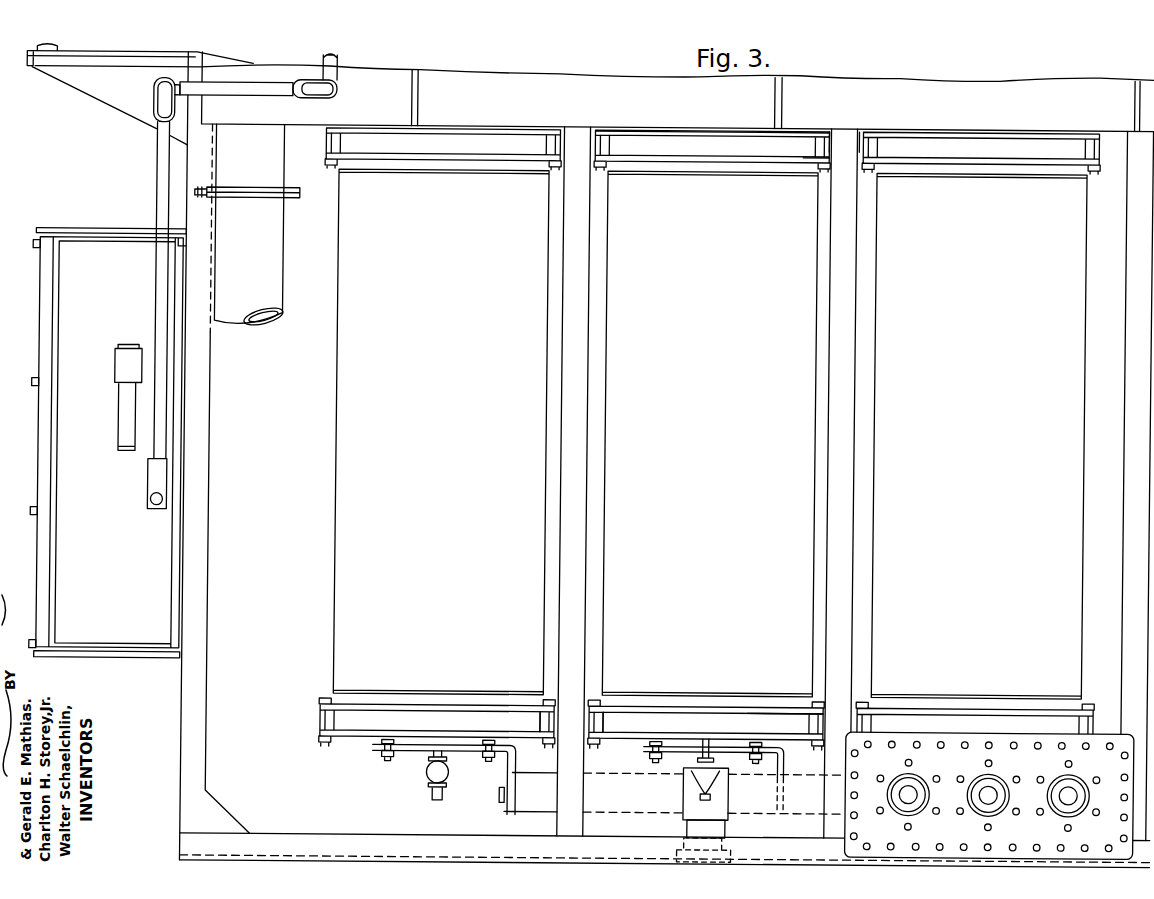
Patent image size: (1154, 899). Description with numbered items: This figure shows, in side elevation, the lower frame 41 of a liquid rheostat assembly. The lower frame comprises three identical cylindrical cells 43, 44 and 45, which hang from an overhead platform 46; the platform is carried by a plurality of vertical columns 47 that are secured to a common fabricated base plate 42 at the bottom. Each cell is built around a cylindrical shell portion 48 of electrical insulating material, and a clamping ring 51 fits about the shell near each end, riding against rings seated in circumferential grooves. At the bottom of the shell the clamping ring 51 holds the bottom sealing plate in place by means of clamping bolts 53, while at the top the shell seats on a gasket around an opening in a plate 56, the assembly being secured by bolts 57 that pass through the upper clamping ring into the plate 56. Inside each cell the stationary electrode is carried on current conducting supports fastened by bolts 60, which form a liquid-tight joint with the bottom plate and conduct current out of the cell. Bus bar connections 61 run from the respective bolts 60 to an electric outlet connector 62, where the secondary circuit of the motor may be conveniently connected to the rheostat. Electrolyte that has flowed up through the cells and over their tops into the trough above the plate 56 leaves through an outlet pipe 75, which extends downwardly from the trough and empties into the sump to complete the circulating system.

The lower frame 41 is at (134, 185).
The fabricated base plate 42 is at (337, 842).
The cylindrical cell 43 is at (459, 187).
The cylindrical cell 44 is at (709, 182).
The cylindrical cell 45 is at (957, 187).
The overhead platform 46 is at (1096, 86).
The vertical columns 47 is at (188, 733).
The cylindrical shell portion 48 is at (871, 307).
The clamping ring 51 is at (802, 163).
The clamping bolts 53 is at (596, 726).
The plate 56 is at (790, 131).
The bolts 57 is at (857, 145).
The bolts 60 is at (656, 757).
The bus bar connections 61 is at (817, 780).
The electric outlet connector 62 is at (1101, 741).
The outlet pipe 75 is at (274, 167).